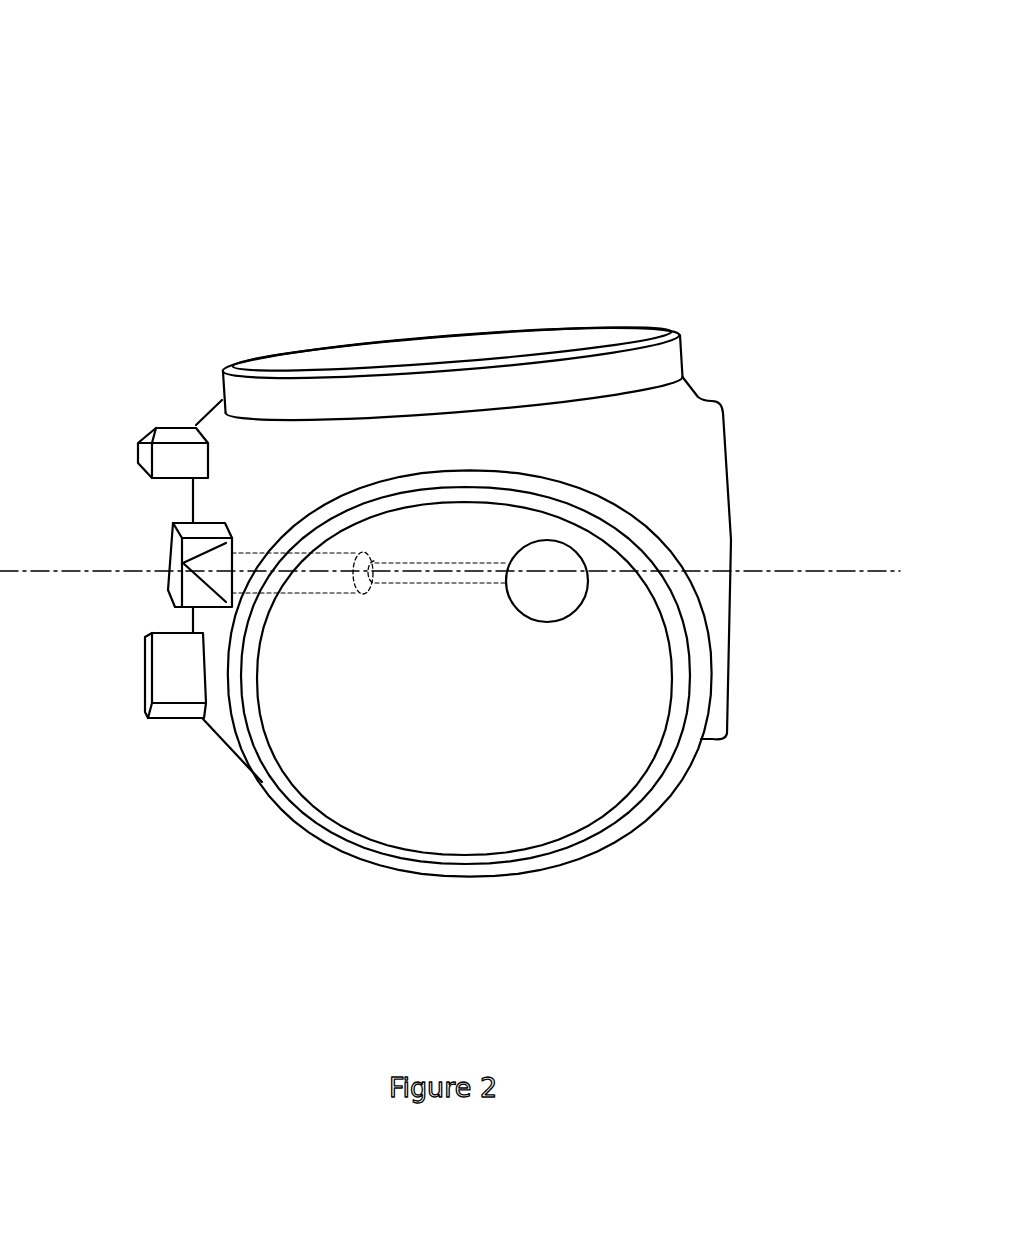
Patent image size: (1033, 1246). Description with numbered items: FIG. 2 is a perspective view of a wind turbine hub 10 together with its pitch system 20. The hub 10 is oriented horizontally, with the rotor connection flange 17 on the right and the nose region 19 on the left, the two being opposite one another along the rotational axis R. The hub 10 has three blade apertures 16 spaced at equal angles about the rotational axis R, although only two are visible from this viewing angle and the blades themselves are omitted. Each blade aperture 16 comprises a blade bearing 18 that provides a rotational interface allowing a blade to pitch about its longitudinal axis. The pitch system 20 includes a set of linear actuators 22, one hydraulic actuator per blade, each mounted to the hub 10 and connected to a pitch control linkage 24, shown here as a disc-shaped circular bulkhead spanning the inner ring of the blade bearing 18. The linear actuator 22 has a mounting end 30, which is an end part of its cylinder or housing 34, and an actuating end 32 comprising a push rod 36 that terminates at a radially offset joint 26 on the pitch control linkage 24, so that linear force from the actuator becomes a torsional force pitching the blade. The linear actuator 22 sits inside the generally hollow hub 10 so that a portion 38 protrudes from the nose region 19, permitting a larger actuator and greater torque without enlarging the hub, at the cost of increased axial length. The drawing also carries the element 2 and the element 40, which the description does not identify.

The sensor device 2 is at (704, 88).
The hub 10 is at (703, 470).
The blade apertures 16 is at (517, 341).
The rotor connection flange 17 is at (727, 411).
The blade bearing 18 is at (246, 365).
The nose region 19 is at (216, 745).
The pitch system 20 is at (461, 666).
The linear actuator 22 is at (356, 600).
The pitch control linkage 24 is at (656, 684).
The radially offset joint 26 is at (559, 612).
The mounting end 30 is at (250, 538).
The actuating end 32 is at (504, 569).
The cylinder 34 is at (335, 590).
The push rod 36 is at (427, 585).
The protruding portion 38 is at (164, 538).
The detector 40 is at (163, 456).
The rotational axis R is at (835, 571).